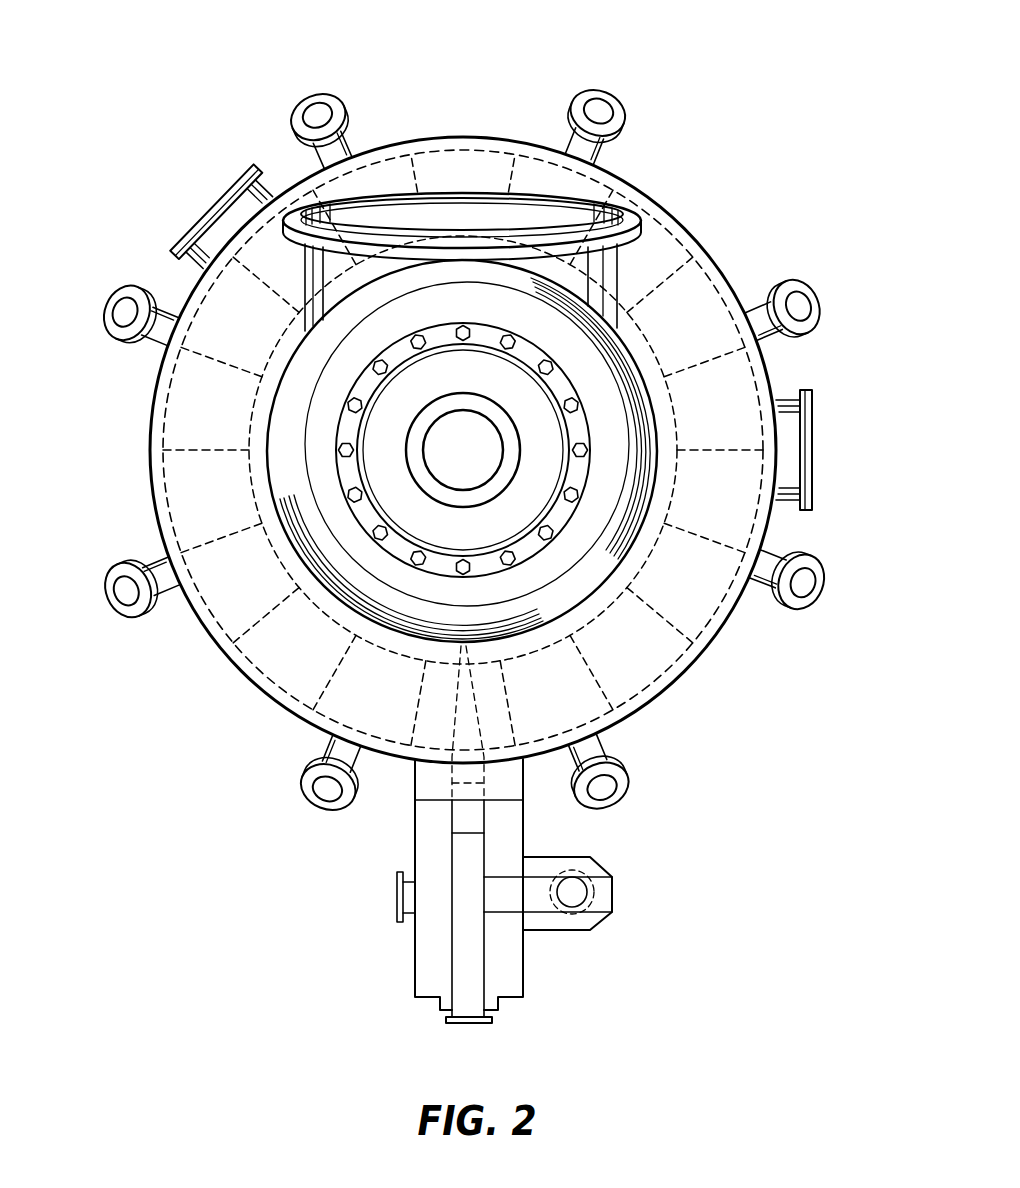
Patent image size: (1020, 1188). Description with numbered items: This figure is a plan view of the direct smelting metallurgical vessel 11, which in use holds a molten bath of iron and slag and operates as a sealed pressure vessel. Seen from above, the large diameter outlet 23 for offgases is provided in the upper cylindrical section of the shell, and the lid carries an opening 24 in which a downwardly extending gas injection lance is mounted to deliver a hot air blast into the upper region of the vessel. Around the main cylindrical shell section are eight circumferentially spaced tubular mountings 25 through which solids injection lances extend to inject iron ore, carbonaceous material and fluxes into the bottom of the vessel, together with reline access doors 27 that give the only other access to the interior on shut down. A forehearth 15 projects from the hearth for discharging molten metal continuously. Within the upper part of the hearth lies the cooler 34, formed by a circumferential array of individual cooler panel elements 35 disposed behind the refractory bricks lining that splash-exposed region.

The metallurgical vessel 11 is at (703, 124).
The forehearth 15 is at (463, 953).
The outlet 23 is at (476, 212).
The opening 24 is at (452, 471).
The tubular mountings 25 is at (297, 104).
The reline access doors 27 is at (213, 217).
The cooler 34 is at (662, 686).
The cooler panel elements 35 is at (725, 380).